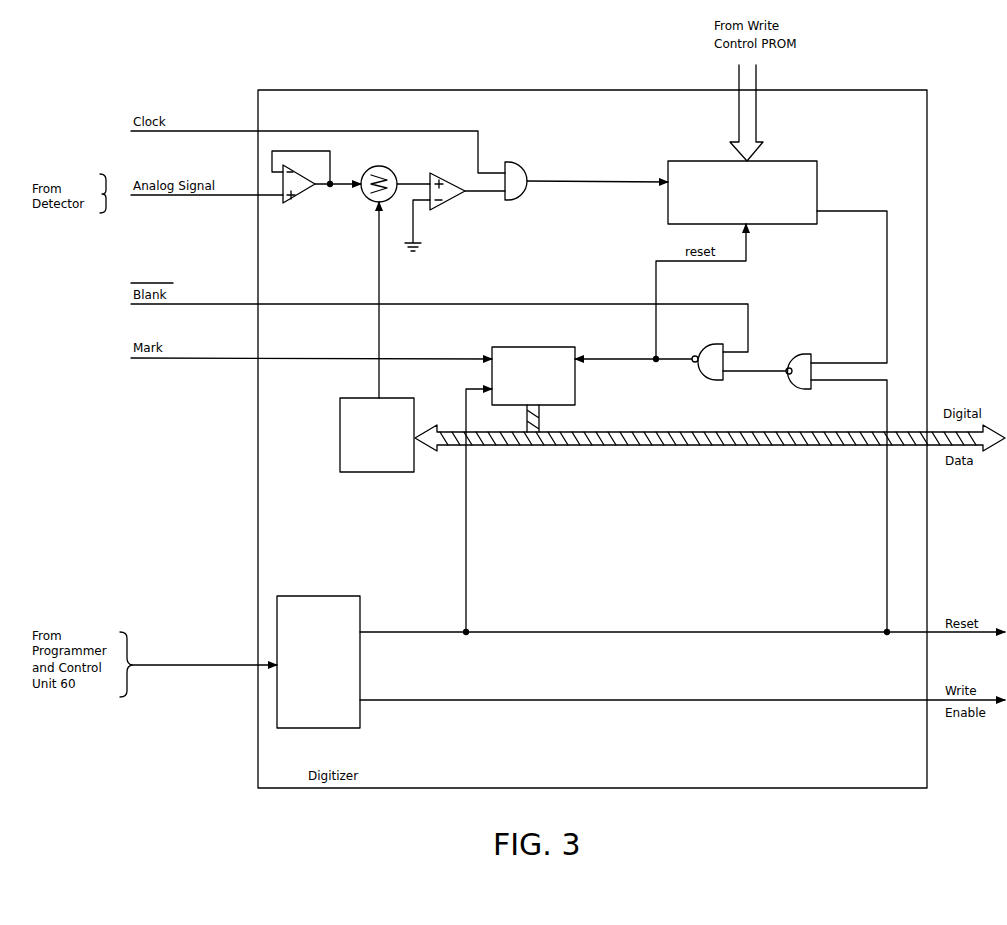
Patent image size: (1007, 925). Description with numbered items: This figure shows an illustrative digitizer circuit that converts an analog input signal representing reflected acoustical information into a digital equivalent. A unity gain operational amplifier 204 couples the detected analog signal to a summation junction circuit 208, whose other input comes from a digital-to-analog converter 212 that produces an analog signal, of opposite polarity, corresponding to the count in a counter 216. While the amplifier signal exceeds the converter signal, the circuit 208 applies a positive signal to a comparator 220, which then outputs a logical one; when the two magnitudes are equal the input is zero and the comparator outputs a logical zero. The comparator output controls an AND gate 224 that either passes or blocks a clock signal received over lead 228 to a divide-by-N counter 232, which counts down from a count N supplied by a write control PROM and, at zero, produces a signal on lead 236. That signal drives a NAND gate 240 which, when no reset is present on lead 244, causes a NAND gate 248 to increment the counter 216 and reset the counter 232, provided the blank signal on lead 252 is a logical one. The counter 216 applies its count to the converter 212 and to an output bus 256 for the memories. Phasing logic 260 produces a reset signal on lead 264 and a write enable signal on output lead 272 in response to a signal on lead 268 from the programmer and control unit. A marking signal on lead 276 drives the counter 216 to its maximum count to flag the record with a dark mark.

The unity gain operational amplifier 204 is at (300, 197).
The summation junction circuit 208 is at (390, 169).
The digital-to-analog converter 212 is at (340, 430).
The counter 216 is at (575, 383).
The comparator 220 is at (448, 202).
The AND gate 224 is at (518, 163).
The lead 228 is at (336, 131).
The divide-by-N counter 232 is at (795, 161).
The lead 236 is at (887, 272).
The NAND gate 240 is at (800, 390).
The lead 244 is at (887, 405).
The NAND gate 248 is at (712, 381).
The lead 252 is at (748, 320).
The output bus 256 is at (732, 446).
The phasing logic 260 is at (315, 596).
The lead 264 is at (395, 632).
The lead 268 is at (172, 665).
The output lead 272 is at (565, 700).
The lead 276 is at (403, 359).